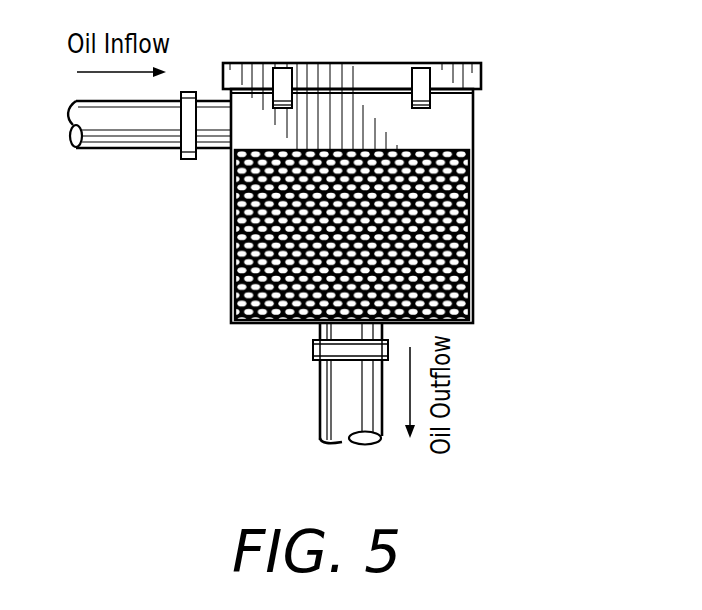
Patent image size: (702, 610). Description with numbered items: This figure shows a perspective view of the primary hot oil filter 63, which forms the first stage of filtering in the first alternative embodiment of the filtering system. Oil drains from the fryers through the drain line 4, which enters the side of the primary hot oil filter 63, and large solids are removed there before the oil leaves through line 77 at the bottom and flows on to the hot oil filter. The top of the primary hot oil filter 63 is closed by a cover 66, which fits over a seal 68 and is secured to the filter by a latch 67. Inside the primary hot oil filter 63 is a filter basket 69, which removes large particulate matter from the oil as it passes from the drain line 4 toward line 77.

The drain line 4 is at (87, 147).
The primary hot oil filter 63 is at (504, 270).
The cover 66 is at (470, 72).
The latch 67 is at (416, 68).
The seal 68 is at (450, 91).
The filter basket 69 is at (450, 210).
The line 77 is at (327, 400).